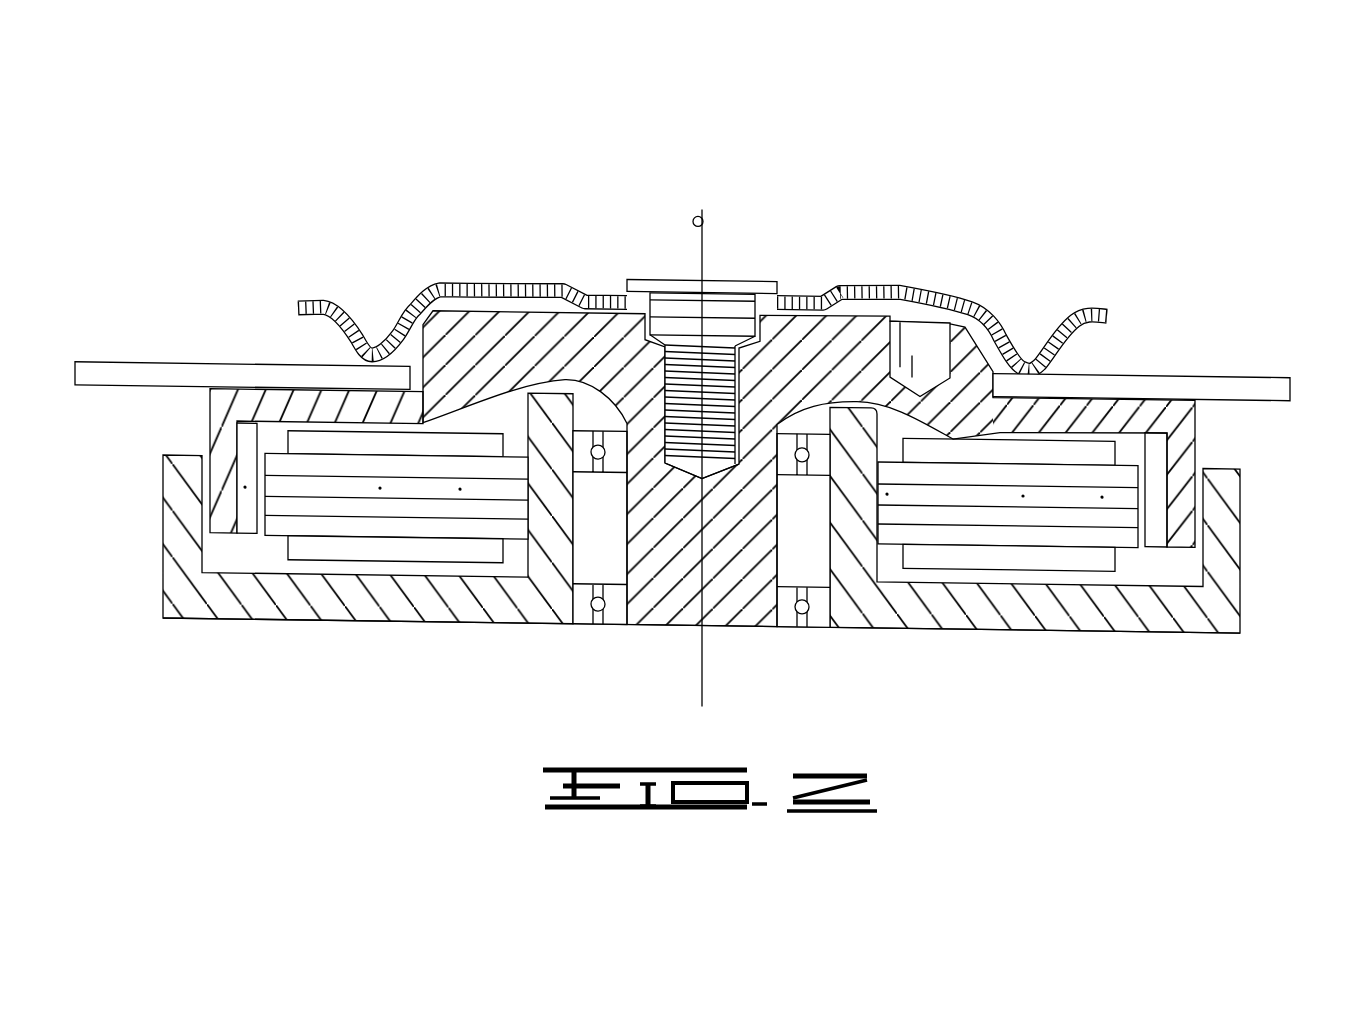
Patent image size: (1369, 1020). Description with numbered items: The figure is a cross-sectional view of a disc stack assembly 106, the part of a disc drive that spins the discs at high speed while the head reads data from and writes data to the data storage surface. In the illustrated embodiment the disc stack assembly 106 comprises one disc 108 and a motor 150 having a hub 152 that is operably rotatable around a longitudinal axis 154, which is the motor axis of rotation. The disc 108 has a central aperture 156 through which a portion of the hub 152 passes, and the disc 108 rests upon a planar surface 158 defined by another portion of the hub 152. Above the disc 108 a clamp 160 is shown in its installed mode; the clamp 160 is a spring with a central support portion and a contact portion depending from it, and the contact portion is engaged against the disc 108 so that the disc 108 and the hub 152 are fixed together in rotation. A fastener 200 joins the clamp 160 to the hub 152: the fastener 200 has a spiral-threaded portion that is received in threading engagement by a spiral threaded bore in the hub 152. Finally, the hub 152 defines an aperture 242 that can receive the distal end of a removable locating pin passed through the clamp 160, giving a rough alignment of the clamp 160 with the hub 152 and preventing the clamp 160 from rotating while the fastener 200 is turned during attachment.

The disc stack assembly 106 is at (468, 118).
The disc 108 is at (1245, 374).
The motor 150 is at (818, 648).
The hub 152 is at (557, 330).
The longitudinal axis 154 is at (707, 213).
The central aperture 156 is at (408, 292).
The planar surface 158 is at (240, 365).
The clamp 160 is at (890, 283).
The fastener 200 is at (667, 272).
The aperture 242 is at (932, 343).